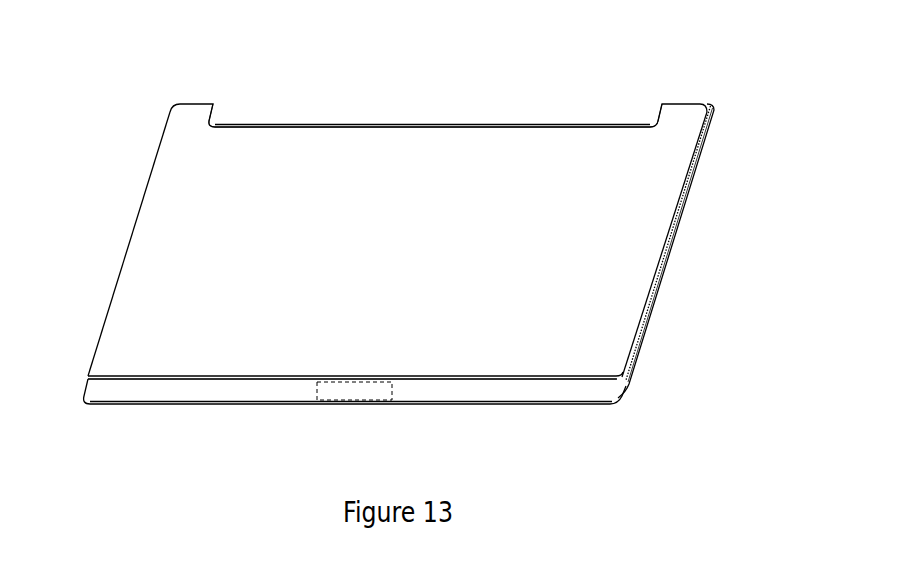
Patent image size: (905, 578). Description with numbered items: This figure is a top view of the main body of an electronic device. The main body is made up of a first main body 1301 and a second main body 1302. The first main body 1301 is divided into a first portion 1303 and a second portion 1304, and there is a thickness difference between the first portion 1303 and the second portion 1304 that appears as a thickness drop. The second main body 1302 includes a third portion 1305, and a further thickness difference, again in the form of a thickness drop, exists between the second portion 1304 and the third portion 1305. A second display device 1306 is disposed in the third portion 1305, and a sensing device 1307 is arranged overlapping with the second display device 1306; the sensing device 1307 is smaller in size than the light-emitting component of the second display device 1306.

The first main body 1301 is at (547, 138).
The second main body 1302 is at (617, 392).
The first portion 1303 is at (450, 117).
The second portion 1304 is at (652, 258).
The third portion 1305 is at (238, 390).
The second display device 1306 is at (185, 390).
The sensing device 1307 is at (338, 392).